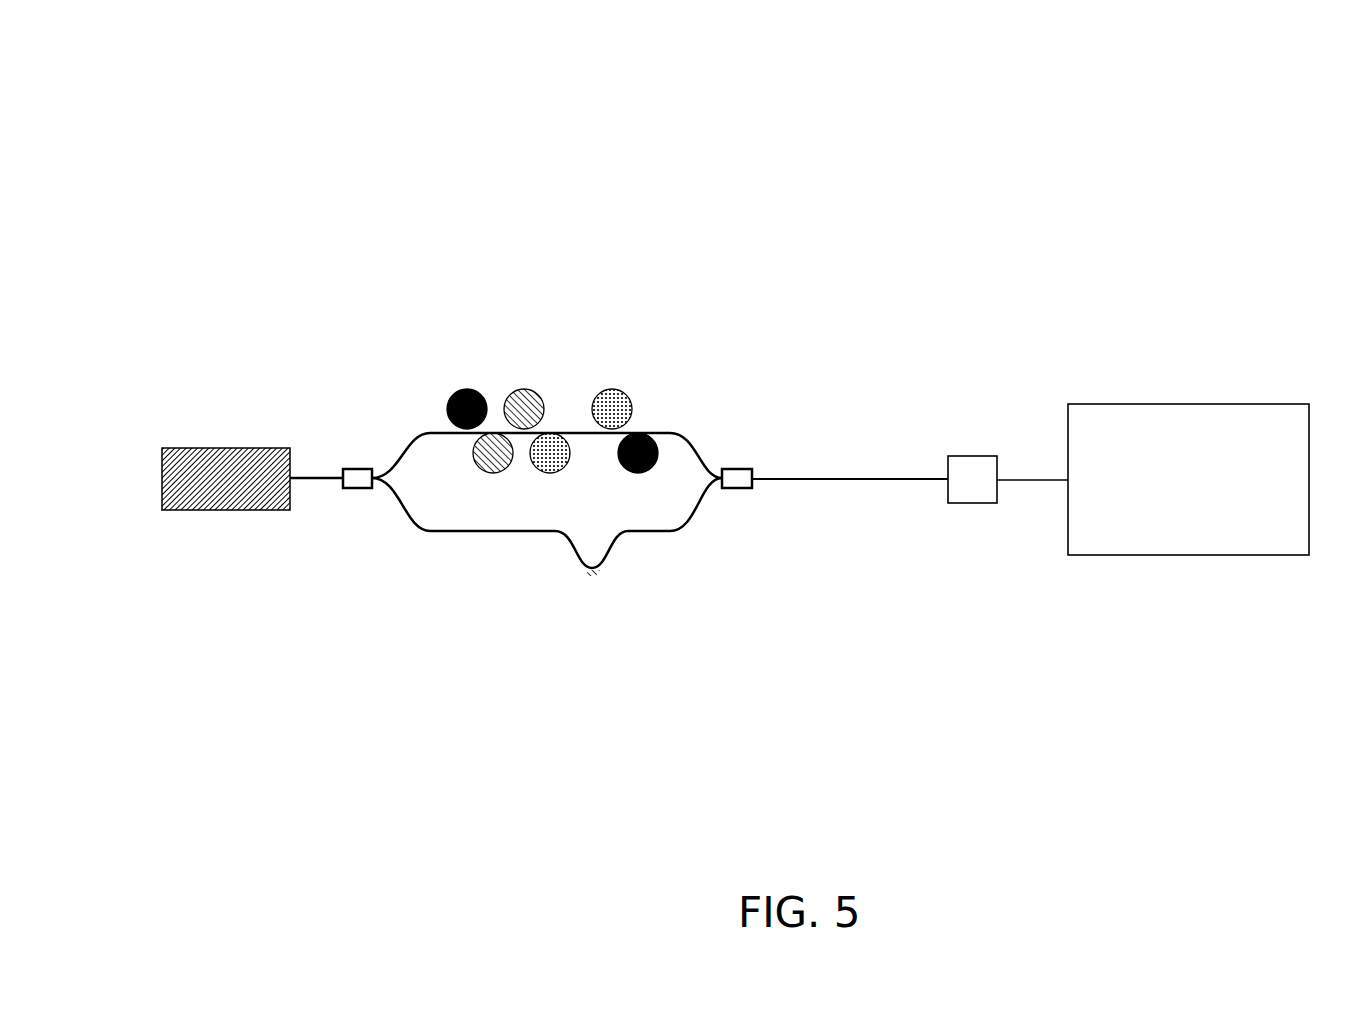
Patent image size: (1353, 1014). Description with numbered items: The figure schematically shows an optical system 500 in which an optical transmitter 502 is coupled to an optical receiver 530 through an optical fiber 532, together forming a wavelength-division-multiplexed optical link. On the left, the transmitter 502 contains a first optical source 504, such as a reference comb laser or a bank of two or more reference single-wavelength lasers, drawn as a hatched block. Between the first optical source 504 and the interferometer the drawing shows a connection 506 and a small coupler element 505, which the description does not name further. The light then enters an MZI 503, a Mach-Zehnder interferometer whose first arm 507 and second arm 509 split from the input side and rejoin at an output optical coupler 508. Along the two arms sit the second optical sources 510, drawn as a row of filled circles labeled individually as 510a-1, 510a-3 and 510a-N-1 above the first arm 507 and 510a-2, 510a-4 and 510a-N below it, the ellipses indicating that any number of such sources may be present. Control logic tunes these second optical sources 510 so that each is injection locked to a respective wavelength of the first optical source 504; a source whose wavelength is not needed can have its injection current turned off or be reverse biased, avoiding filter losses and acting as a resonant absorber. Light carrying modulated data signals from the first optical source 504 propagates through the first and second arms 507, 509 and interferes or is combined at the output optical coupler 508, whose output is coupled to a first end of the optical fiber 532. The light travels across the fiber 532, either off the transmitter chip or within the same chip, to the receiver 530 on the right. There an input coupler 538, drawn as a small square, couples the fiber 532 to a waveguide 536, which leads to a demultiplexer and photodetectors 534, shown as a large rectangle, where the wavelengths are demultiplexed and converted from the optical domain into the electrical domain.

The optical system 500 is at (545, 88).
The optical transmitter 502 is at (262, 283).
The MZI 503 is at (388, 403).
The first optical source 504 is at (226, 479).
The input coupler 505 is at (355, 488).
The input waveguide 506 is at (313, 480).
The first arm 507 is at (428, 440).
The output optical coupler 508 is at (736, 488).
The second arm 509 is at (418, 515).
The second optical sources 510 is at (685, 308).
The first sensing element 510a-1 is at (467, 388).
The second sensing element 510a-2 is at (493, 474).
The third sensing element 510a-3 is at (524, 388).
The fourth sensing element 510a-4 is at (550, 474).
The (N-1)th sensing element 510a-N-1 is at (612, 388).
The Nth sensing element 510a-N is at (638, 474).
The optical receiver 530 is at (1008, 340).
The optical fiber 532 is at (843, 478).
The demultiplexer and photodetector(s) 534 is at (1212, 403).
The waveguide 536 is at (1033, 480).
The input coupler 538 is at (977, 467).